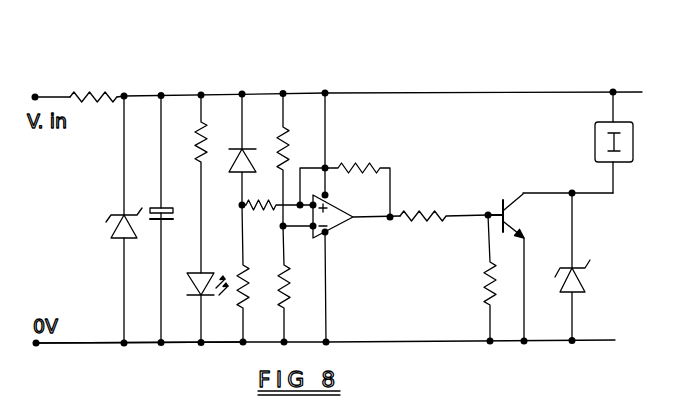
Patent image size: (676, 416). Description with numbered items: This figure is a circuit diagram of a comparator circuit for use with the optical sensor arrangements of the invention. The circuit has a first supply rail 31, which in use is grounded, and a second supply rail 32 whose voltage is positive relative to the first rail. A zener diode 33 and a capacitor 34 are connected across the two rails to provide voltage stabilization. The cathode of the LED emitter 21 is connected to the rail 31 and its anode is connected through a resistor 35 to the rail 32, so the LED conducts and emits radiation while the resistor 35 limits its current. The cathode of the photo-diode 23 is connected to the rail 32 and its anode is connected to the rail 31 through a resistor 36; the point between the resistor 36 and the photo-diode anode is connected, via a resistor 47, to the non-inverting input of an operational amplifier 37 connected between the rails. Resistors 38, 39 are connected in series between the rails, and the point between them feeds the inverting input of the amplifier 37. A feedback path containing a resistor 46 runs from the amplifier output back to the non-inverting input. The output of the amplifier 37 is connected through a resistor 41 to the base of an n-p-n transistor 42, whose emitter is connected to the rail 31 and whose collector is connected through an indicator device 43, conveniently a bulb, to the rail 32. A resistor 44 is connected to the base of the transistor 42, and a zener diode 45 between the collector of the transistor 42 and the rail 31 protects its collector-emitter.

The LED emitter 21 is at (190, 283).
The photo-diode 23 is at (250, 166).
The first supply rail 31 is at (73, 345).
The second supply rail 32 is at (60, 97).
The zener diode 33 is at (108, 236).
The capacitor 34 is at (152, 208).
The resistor 35 is at (196, 160).
The resistor 36 is at (253, 290).
The operational amplifier 37 is at (345, 222).
The resistor 38 is at (292, 160).
The resistor 39 is at (288, 270).
The resistor 41 is at (428, 210).
The n-p-n transistor 42 is at (508, 205).
The indicator device 43 is at (595, 142).
The resistor 44 is at (483, 290).
The zener diode 45 is at (580, 283).
The resistor 46 is at (360, 160).
The resistor 47 is at (258, 208).